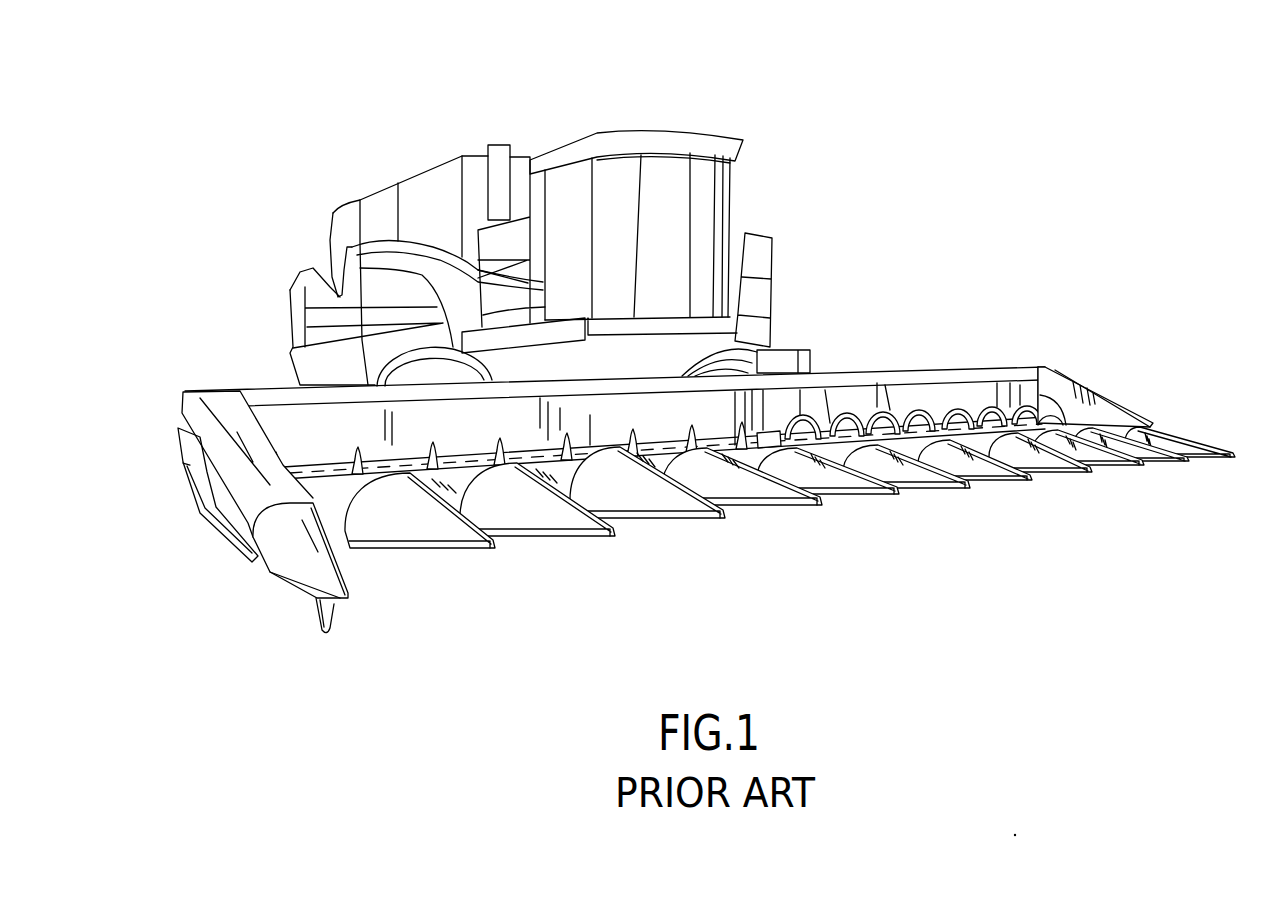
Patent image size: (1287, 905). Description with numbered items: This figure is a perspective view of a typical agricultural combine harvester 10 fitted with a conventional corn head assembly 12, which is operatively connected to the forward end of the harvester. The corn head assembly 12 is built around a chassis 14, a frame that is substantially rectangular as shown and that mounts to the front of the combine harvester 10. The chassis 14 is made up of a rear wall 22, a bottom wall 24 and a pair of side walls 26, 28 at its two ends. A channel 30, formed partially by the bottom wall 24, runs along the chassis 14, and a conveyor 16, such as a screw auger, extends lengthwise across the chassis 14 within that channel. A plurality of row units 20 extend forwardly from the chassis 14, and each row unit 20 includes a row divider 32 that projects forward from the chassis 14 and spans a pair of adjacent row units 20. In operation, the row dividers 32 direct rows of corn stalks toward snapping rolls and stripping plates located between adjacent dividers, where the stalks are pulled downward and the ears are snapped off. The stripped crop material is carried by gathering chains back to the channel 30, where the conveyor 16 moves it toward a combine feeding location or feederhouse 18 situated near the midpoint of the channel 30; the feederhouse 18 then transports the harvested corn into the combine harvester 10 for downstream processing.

The combine harvester 10 is at (402, 126).
The corn head assembly 12 is at (681, 349).
The chassis 14 is at (928, 375).
The conveyor 16 is at (513, 453).
The feederhouse 18 is at (678, 418).
The row units 20 is at (845, 510).
The rear wall 22 is at (300, 446).
The bottom wall 24 is at (217, 542).
The side wall 26 is at (186, 466).
The side wall 28 is at (1042, 397).
The channel 30 is at (978, 400).
The row divider 32 is at (643, 527).